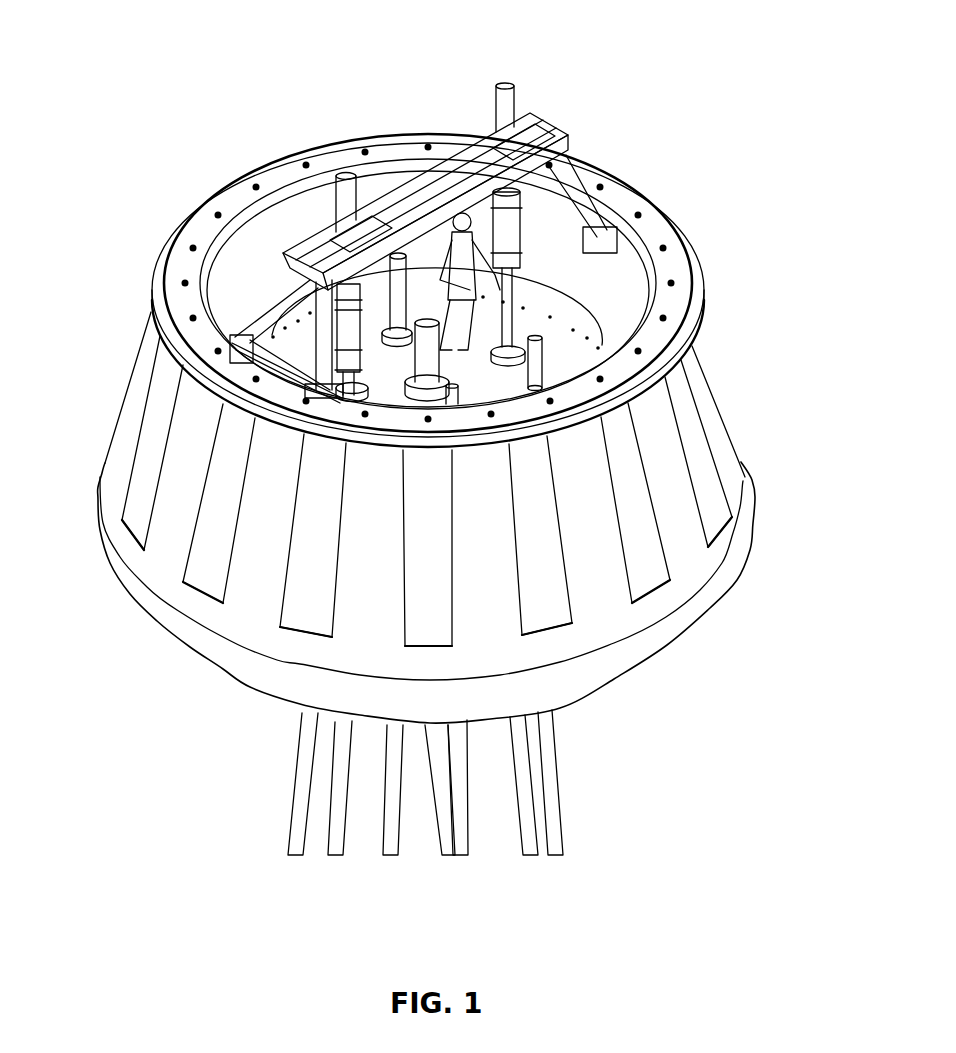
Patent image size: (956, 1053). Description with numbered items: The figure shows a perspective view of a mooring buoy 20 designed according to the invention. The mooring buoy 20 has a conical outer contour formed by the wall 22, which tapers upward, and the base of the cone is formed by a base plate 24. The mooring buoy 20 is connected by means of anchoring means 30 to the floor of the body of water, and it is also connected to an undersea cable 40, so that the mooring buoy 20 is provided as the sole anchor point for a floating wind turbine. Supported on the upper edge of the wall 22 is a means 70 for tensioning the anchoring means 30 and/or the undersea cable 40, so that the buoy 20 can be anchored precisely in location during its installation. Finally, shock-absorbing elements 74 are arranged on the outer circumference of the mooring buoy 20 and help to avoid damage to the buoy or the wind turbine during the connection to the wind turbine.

The mooring buoy 20 is at (113, 156).
The wall 22 is at (712, 427).
The base plate 24 is at (565, 353).
The anchoring means 30 is at (297, 797).
The undersea cable 40 is at (440, 757).
The means for tensioning 70 is at (560, 125).
The shock-absorbing elements 74 is at (707, 333).